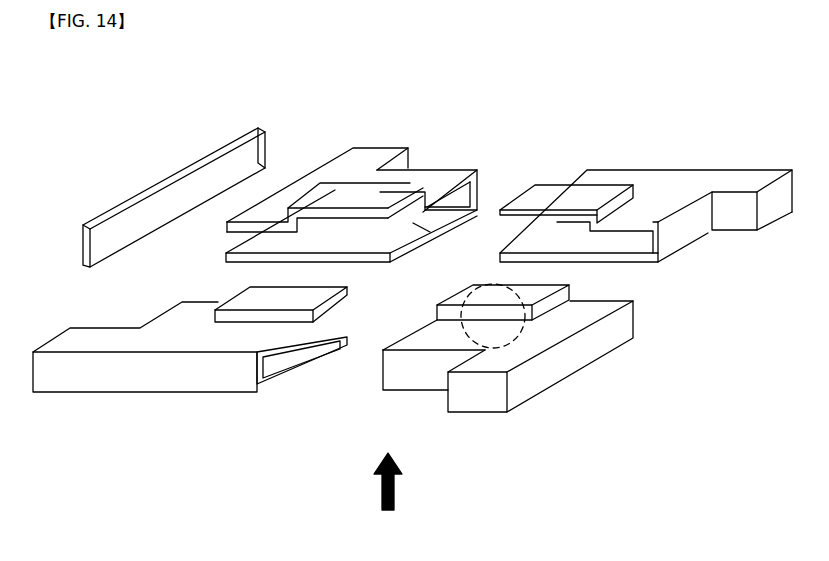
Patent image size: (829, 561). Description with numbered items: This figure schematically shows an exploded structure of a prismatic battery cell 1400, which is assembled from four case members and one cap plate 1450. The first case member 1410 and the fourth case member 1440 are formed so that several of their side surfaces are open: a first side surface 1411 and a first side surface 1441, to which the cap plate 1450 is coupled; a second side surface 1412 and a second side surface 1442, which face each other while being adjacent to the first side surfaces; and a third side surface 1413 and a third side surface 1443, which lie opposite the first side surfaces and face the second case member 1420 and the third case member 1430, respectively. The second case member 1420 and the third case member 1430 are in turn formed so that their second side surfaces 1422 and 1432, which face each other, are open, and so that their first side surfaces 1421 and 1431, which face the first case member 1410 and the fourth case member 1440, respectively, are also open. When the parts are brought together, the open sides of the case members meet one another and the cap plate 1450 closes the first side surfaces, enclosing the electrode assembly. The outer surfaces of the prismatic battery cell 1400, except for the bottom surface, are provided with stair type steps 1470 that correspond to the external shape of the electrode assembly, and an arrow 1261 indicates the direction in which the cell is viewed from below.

The prismatic battery cell 1400 is at (118, 113).
The first case member 1410 is at (441, 113).
The first side surface 1411 is at (140, 280).
The second side surface 1412 is at (362, 233).
The third side surface 1413 is at (510, 233).
The second case member 1420 is at (671, 113).
The first side surface 1421 is at (493, 210).
The second side surface 1422 is at (628, 238).
The third case member 1430 is at (548, 407).
The first side surface 1431 is at (382, 352).
The second side surface 1432 is at (603, 298).
The fourth case member 1440 is at (157, 414).
The first side surface 1441 is at (223, 238).
The second side surface 1442 is at (372, 322).
The third side surface 1443 is at (297, 347).
The cap plate 1450 is at (257, 127).
The stair type step 1470 is at (470, 338).
The arrow 1261 is at (385, 495).